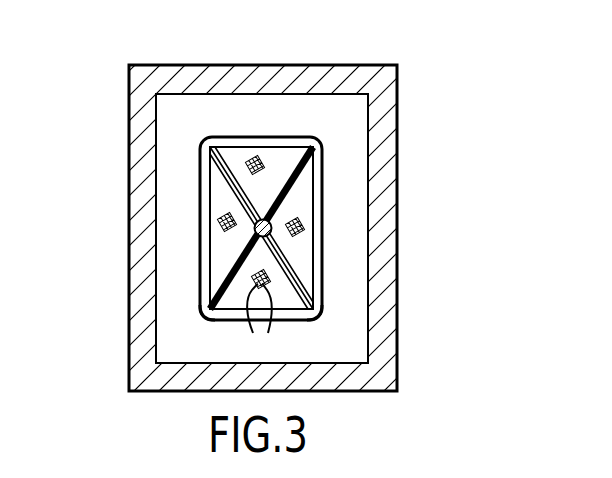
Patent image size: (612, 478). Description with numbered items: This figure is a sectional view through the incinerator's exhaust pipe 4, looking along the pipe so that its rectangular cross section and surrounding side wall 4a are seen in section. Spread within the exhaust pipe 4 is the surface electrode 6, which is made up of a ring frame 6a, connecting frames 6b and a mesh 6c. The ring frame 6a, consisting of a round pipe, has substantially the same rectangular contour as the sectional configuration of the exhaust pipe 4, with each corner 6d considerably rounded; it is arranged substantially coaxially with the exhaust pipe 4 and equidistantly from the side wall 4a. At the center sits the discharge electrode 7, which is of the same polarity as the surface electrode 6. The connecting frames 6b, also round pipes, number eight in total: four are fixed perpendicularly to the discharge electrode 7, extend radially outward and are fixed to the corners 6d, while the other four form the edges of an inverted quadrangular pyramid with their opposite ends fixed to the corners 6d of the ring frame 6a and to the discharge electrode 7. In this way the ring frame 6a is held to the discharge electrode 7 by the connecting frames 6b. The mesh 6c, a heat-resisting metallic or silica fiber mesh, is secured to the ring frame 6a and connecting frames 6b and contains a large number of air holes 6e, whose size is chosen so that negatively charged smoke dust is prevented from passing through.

The exhaust pipe 4 is at (397, 290).
The side wall 4a is at (157, 118).
The surface electrode 6 is at (323, 150).
The ring frame 6a is at (324, 227).
The connecting frames 6b is at (230, 290).
The mesh 6c is at (224, 222).
The corner 6d is at (204, 322).
The air holes 6e is at (261, 313).
The discharge electrode 7 is at (272, 224).